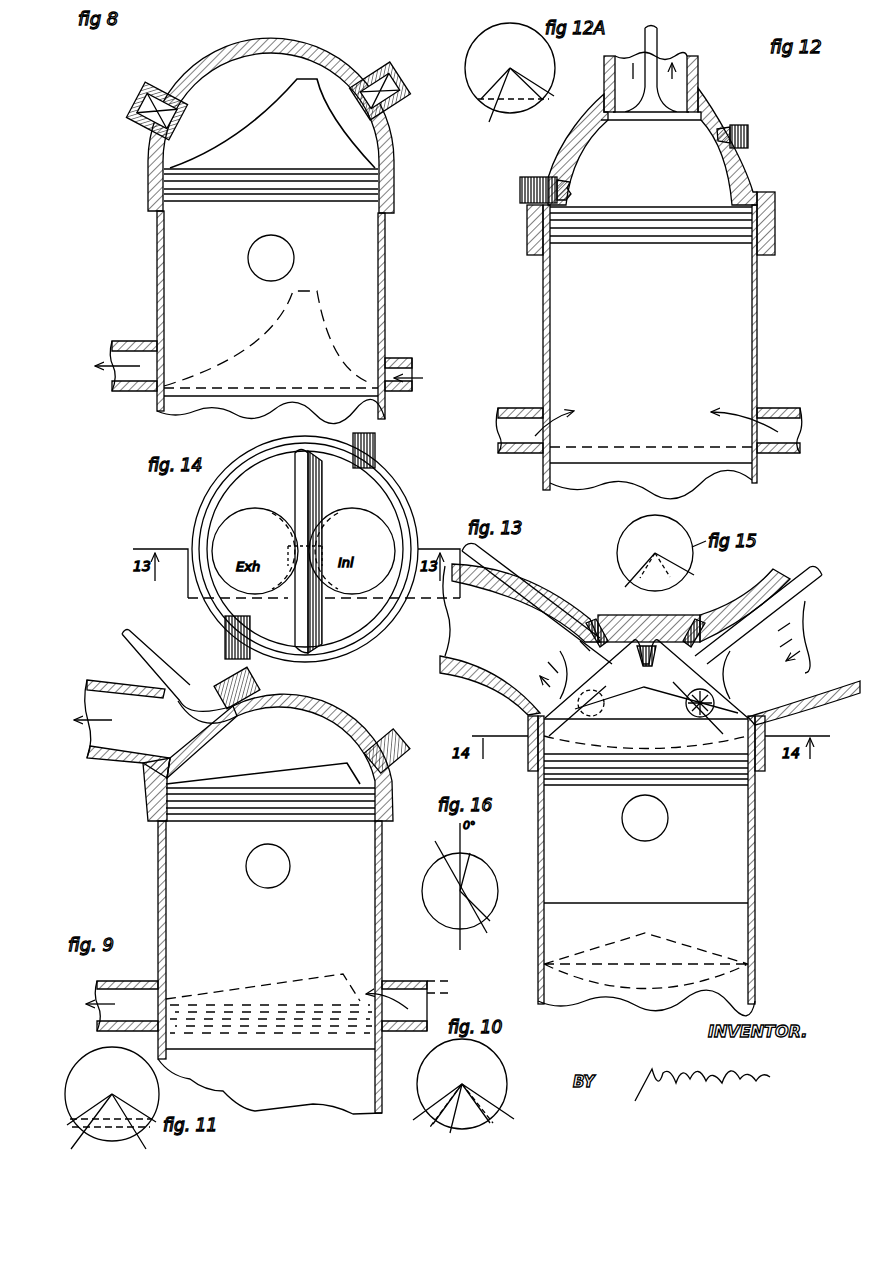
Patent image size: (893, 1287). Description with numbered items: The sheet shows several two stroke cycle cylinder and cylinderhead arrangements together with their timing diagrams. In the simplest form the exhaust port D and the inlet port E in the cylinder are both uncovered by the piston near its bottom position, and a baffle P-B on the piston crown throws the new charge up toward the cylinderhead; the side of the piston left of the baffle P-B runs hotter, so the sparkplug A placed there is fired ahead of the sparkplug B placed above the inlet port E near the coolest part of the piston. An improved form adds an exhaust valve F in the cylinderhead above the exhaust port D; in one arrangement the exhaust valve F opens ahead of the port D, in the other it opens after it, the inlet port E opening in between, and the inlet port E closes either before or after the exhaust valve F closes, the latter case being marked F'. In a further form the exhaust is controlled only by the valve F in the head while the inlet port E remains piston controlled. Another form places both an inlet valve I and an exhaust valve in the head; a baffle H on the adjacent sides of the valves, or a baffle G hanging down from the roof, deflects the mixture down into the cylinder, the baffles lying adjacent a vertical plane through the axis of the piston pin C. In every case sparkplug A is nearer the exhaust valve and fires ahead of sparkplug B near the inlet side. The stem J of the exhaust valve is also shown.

In FIG. 8, the sparkplug A is at (141, 103).
In FIG. 12, the sparkplug A is at (743, 129).
In FIG. 14, the sparkplug A is at (224, 650).
In FIG. 9, the sparkplug A is at (256, 682).
In FIG. 13, the sparkplug A is at (591, 715).
In FIG. 8, the sparkplug B is at (396, 80).
In FIG. 12, the sparkplug B is at (512, 185).
In FIG. 14, the sparkplug B is at (376, 450).
In FIG. 9, the sparkplug B is at (403, 755).
In FIG. 13, the sparkplug B is at (700, 714).
In FIG. 9, the piston pin C is at (291, 873).
In FIG. 13, the piston pin C is at (668, 816).
In FIG. 9, the exhaust port D is at (122, 1006).
In FIG. 11, the exhaust port D is at (109, 1114).
In FIG. 10, the exhaust port D is at (461, 1109).
In FIG. 12, the inlet port E is at (649, 430).
In FIG. 12A, the inlet port E is at (512, 91).
In FIG. 9, the inlet port E is at (396, 1006).
In FIG. 11, the inlet port E is at (111, 1129).
In FIG. 10, the inlet port E is at (466, 1102).
In FIG. 12, the exhaust valve F is at (651, 86).
In FIG. 12A, the exhaust valve F is at (526, 101).
In FIG. 9, the exhaust valve F is at (179, 690).
In FIG. 11, the exhaust valve F is at (113, 1125).
In FIG. 10, the exhaust valve F is at (486, 1117).
In FIG. 10, the exhaust valve closing point F' is at (432, 1109).
In FIG. 13, the baffle G is at (661, 667).
In FIG. 14, the baffle H is at (302, 556).
In FIG. 13, the baffle H is at (590, 634).
In FIG. 16, the baffle H is at (495, 887).
In FIG. 13, the inlet valve I is at (736, 667).
In FIG. 15, the inlet valve I is at (649, 568).
In FIG. 16, the inlet valve I is at (451, 890).
In FIG. 13, the exhaust valve stem J is at (558, 648).
In FIG. 15, the exhaust valve stem J is at (657, 577).
In FIG. 8, the baffle on the piston P-B is at (328, 121).
In FIG. 9, the baffle on the piston P-B is at (220, 778).